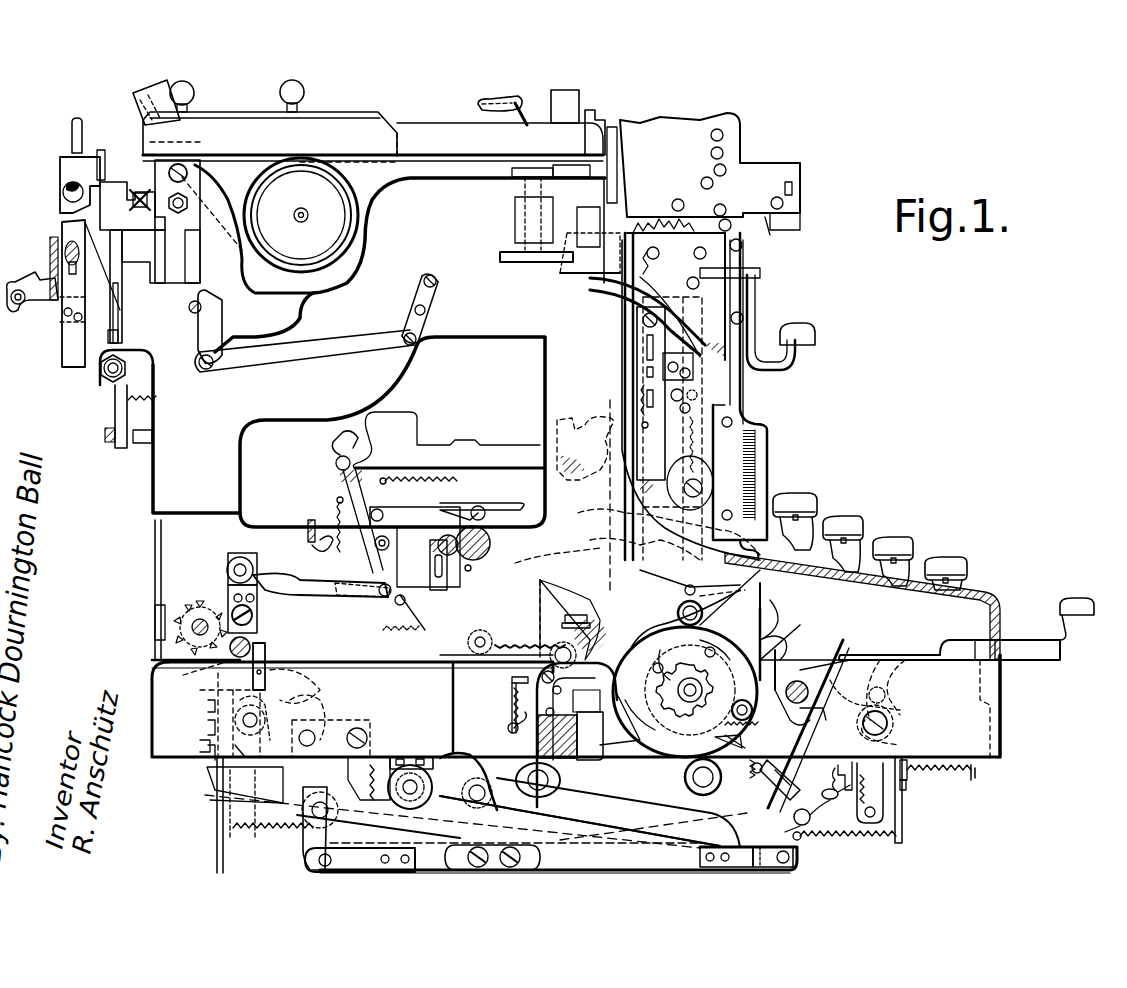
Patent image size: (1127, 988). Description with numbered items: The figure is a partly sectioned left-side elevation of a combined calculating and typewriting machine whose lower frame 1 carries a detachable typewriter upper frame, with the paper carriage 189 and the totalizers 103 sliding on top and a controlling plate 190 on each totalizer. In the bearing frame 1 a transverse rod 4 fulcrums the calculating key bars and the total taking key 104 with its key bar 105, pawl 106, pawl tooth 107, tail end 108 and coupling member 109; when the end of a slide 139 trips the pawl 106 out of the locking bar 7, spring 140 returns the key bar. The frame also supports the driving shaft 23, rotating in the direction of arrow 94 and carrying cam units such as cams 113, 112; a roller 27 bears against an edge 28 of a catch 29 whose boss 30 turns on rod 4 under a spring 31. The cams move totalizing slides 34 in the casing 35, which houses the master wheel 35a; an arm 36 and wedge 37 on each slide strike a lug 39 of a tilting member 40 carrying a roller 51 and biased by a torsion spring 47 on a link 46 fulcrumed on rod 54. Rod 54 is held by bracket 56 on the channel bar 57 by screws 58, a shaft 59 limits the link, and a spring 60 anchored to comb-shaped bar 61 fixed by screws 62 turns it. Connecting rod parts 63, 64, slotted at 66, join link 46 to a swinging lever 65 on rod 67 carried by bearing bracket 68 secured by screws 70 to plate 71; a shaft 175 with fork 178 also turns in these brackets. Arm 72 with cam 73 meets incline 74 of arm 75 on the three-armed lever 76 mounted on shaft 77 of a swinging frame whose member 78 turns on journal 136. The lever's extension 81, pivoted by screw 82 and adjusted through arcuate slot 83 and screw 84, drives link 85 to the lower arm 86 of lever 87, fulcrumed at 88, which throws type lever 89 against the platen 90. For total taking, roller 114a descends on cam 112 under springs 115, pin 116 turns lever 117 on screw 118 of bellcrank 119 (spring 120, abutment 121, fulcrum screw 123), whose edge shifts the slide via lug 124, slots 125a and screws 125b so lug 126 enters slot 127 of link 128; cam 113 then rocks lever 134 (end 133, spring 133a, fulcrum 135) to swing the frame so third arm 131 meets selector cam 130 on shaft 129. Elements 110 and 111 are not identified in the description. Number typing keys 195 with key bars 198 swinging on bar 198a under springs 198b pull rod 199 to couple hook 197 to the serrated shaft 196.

The lower frame 1 is at (1030, 737).
The transverse rod 4 is at (823, 668).
The locking bar 7 is at (885, 727).
The driving shaft 23 is at (665, 700).
The roller 27 is at (740, 697).
The edge 28 is at (776, 657).
The catch 29 is at (838, 648).
The boss 30 is at (800, 682).
The spring 31 is at (716, 747).
The totalizing slide 34 is at (728, 444).
The casing 35 is at (798, 389).
The totalizer actuating master wheel 35a is at (655, 240).
The arm 36 is at (778, 618).
The wedge 37 is at (788, 642).
The lug 39 is at (800, 707).
The tilting member 40 is at (760, 775).
The link 46 is at (797, 838).
The torsion spring 47 is at (830, 776).
The roller 51 is at (752, 765).
The rod 54 is at (772, 846).
The bracket 56 is at (836, 796).
The transverse bar 57 is at (908, 772).
The screws 58 is at (882, 790).
The shaft 59 is at (811, 817).
The spring 60 is at (860, 838).
The comb-shaped bar 61 is at (903, 820).
The screws 62 is at (906, 785).
The connecting rod part 63 is at (690, 862).
The connecting rod part 64 is at (440, 840).
The swinging lever 65 is at (308, 845).
The slot 66 is at (455, 853).
The rod 67 is at (297, 818).
The bearing bracket 68 is at (212, 797).
The screws 70 is at (240, 745).
The transverse plate 71 is at (210, 741).
The arm 72 is at (333, 736).
The cam 73 is at (305, 700).
The incline 74 is at (300, 710).
The arm 75 is at (300, 678).
The three-armed lever 76 is at (262, 640).
The shaft 77 is at (233, 663).
The frame member 78 is at (370, 628).
The extension 81 is at (228, 572).
The screw 82 is at (252, 614).
The arcuate slot 83 is at (258, 583).
The headed screw 84 is at (232, 592).
The link 85 is at (296, 578).
The lower arm 86 is at (438, 590).
The lever 87 is at (345, 492).
The fulcrum 88 is at (387, 546).
The type lever 89 is at (468, 447).
The platen 90 is at (345, 218).
The arrow 94 is at (640, 720).
The totalizers 103 is at (780, 172).
The total taking key 104 is at (1072, 598).
The total taking key bar 105 is at (1020, 655).
The pawl 106 is at (903, 690).
The pawl tooth 107 is at (915, 715).
The tail end 108 is at (757, 620).
The coupling member 109 is at (700, 628).
The rod 110 is at (760, 608).
The pawl 111 is at (700, 710).
The cam 112 is at (665, 700).
The cam 113 is at (630, 740).
The roller 114a is at (730, 582).
The springs 115 is at (687, 420).
The pin 116 is at (688, 590).
The lever 117 is at (685, 618).
The headed screw 118 is at (512, 680).
The bellcrank 119 is at (540, 600).
The spring 120 is at (510, 724).
The abutment 121 is at (587, 620).
The fulcrum screw 123 is at (538, 745).
The lug 124 is at (575, 615).
The slots 125a is at (676, 613).
The headed screws 125b is at (556, 615).
The lug 126 is at (545, 645).
The slot 127 is at (568, 673).
The link 128 is at (513, 700).
The selector cam shaft 129 is at (160, 594).
The selector cam 130 is at (158, 633).
The third arm 131 is at (158, 658).
The front end 133 is at (734, 738).
The spring 133a is at (372, 785).
The lever 134 is at (610, 830).
The fulcrum screw 135 is at (392, 800).
The journal 136 is at (478, 632).
The slide 139 is at (768, 582).
The spring 140 is at (972, 780).
The shaft 175 is at (210, 722).
The fork 178 is at (225, 707).
The paper carriage 189 is at (330, 122).
The controlling plate 190 is at (722, 232).
The number typing keys 195 is at (795, 500).
The serrated driving shaft 196 is at (491, 545).
The hook 197 is at (476, 505).
The key bars 198 is at (585, 540).
The transverse bar 198a is at (310, 520).
The springs 198b is at (340, 540).
The spring-controlled rod 199 is at (415, 524).